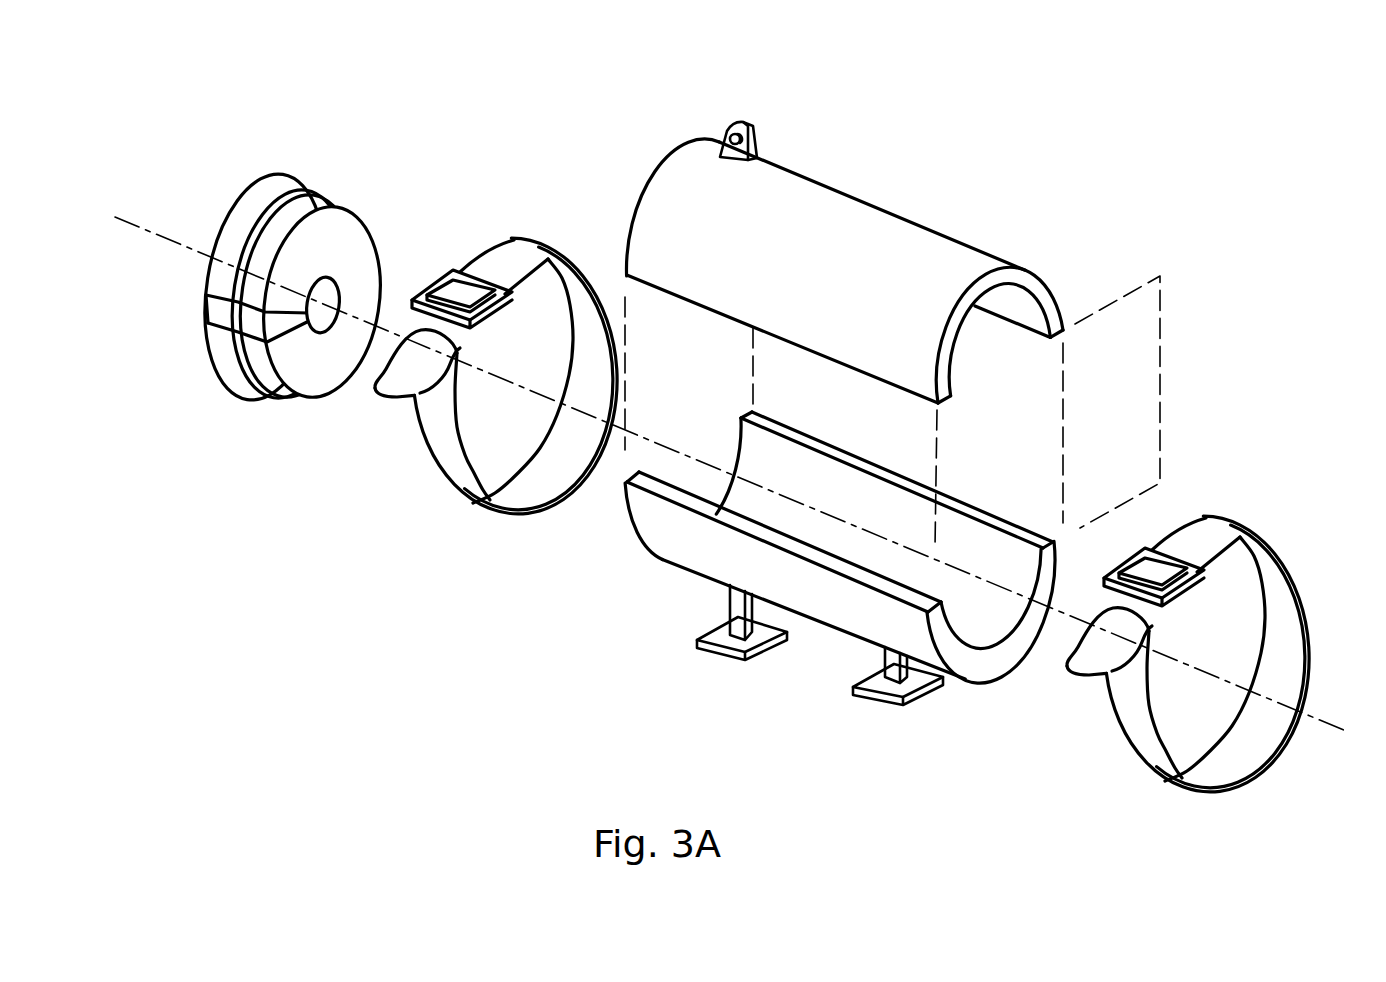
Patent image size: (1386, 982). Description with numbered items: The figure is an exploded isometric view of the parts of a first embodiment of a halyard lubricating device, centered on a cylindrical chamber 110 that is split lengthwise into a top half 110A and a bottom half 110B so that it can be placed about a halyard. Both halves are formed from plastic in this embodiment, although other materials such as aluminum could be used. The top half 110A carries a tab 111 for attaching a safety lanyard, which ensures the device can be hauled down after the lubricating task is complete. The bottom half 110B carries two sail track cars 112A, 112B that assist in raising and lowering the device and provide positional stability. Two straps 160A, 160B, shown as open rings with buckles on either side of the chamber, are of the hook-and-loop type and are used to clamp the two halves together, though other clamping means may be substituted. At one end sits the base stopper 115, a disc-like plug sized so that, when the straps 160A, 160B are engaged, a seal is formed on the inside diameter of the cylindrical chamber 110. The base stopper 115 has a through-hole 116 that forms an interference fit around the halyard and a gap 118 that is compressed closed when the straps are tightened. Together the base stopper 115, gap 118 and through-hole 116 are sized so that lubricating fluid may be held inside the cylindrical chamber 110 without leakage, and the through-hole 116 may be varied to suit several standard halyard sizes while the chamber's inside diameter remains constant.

The cylindrical chamber 110 is at (1165, 387).
The top half 110A is at (918, 247).
The bottom half 110B is at (695, 555).
The tab 111 is at (757, 121).
The sail track car 112A is at (720, 633).
The sail track car 112B is at (878, 683).
The base stopper 115 is at (242, 220).
The through-hole 116 is at (324, 287).
The gap 118 is at (245, 315).
The strap 160A is at (503, 257).
The strap 160B is at (1208, 532).